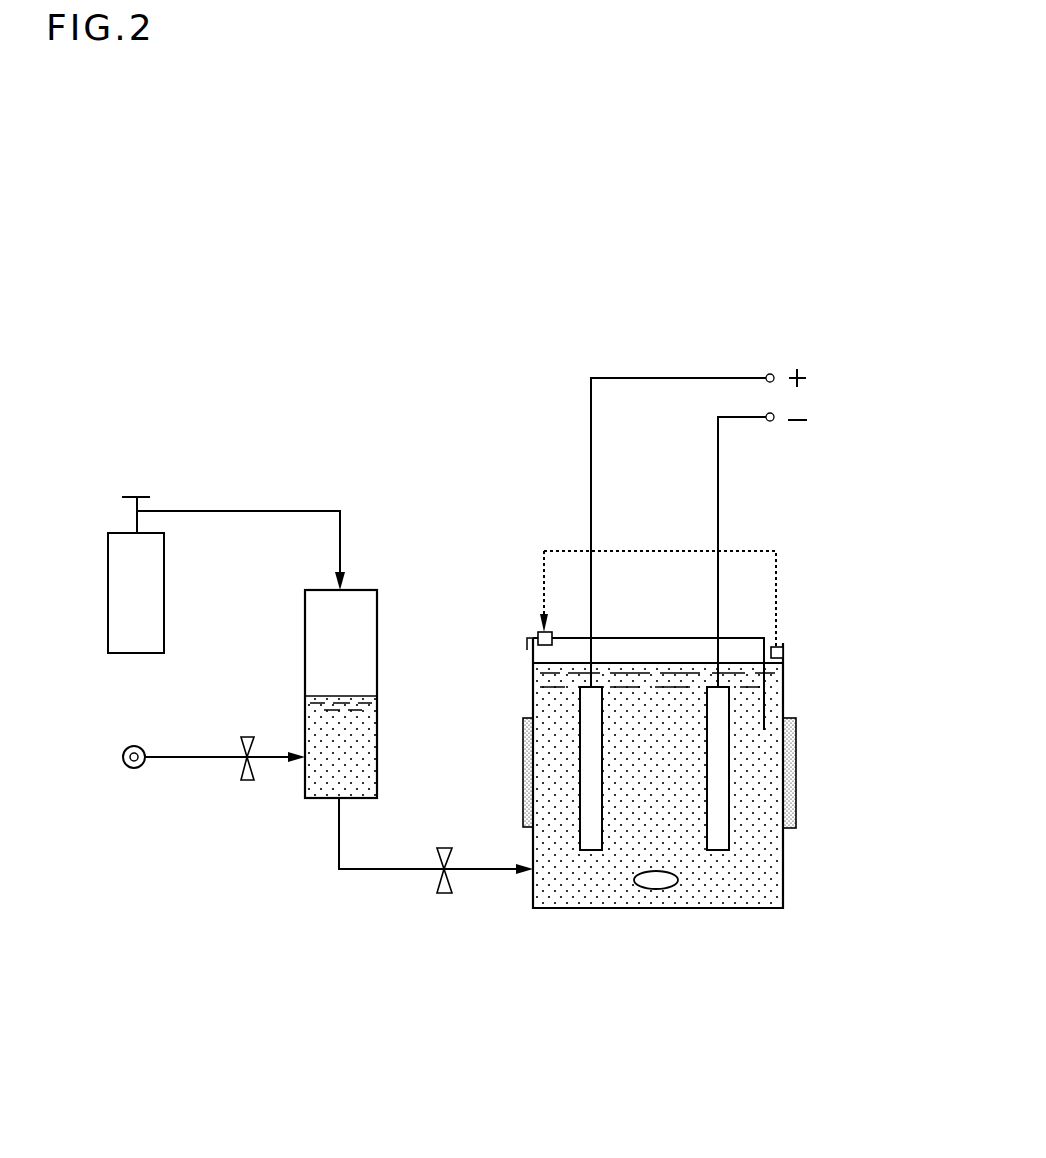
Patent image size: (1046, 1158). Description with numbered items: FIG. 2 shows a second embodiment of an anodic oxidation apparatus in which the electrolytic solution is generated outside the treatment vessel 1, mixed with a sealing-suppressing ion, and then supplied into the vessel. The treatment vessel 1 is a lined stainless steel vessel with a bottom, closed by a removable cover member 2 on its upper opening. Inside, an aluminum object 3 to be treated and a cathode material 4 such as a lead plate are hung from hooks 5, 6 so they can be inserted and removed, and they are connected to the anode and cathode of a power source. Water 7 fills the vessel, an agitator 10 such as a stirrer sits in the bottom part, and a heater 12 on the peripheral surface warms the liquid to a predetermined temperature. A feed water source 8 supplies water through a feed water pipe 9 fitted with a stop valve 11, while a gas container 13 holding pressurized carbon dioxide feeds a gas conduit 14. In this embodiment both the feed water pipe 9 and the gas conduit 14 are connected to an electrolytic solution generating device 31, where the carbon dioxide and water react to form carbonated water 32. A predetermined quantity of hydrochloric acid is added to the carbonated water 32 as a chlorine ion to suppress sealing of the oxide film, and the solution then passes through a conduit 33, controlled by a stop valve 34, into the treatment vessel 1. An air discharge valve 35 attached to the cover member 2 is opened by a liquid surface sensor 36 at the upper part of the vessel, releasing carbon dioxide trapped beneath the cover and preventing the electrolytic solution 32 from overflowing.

The treatment vessel 1 is at (533, 694).
The cover member 2 is at (660, 637).
The object to be treated 3 is at (587, 772).
The cathode material 4 is at (712, 763).
The hook 5 is at (591, 650).
The hook 6 is at (718, 650).
The water 7 is at (596, 897).
The feed water source 8 is at (134, 769).
The feed water pipe 9 is at (184, 757).
The agitator 10 is at (661, 883).
The stop valve 11 is at (248, 780).
The heater 12 is at (792, 790).
The gas container 13 is at (133, 599).
The gas conduit 14 is at (226, 510).
The electrolytic solution generating device 31 is at (305, 650).
The carbonated water 32 is at (378, 768).
The conduit 33 is at (375, 870).
The stop valve 34 is at (446, 893).
The air discharge valve 35 is at (539, 635).
The liquid surface sensor 36 is at (783, 651).